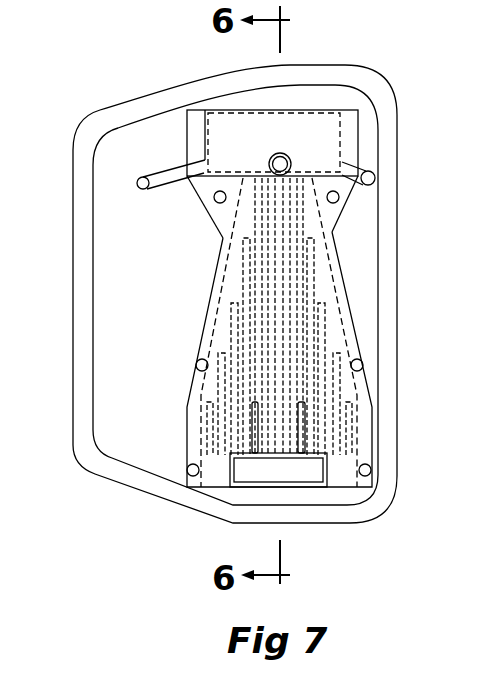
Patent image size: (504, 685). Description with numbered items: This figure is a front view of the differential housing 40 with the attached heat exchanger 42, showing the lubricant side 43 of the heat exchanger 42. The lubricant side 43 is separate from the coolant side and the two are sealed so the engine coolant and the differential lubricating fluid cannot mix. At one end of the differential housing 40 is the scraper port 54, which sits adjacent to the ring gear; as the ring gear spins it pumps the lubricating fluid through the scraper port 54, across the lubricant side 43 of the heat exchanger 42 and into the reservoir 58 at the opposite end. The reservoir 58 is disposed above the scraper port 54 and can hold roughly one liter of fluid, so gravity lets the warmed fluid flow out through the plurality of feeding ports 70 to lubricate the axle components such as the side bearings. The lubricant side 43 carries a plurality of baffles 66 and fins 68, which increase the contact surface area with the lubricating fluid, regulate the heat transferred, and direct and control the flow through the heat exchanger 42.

The differential housing 40 is at (338, 67).
The heat exchanger 42 is at (214, 307).
The lubricant side 43 is at (223, 215).
The scraper port 54 is at (300, 475).
The reservoir 58 is at (217, 127).
The baffles 66 is at (336, 332).
The fins 68 is at (313, 273).
The feeding ports 70 is at (165, 182).